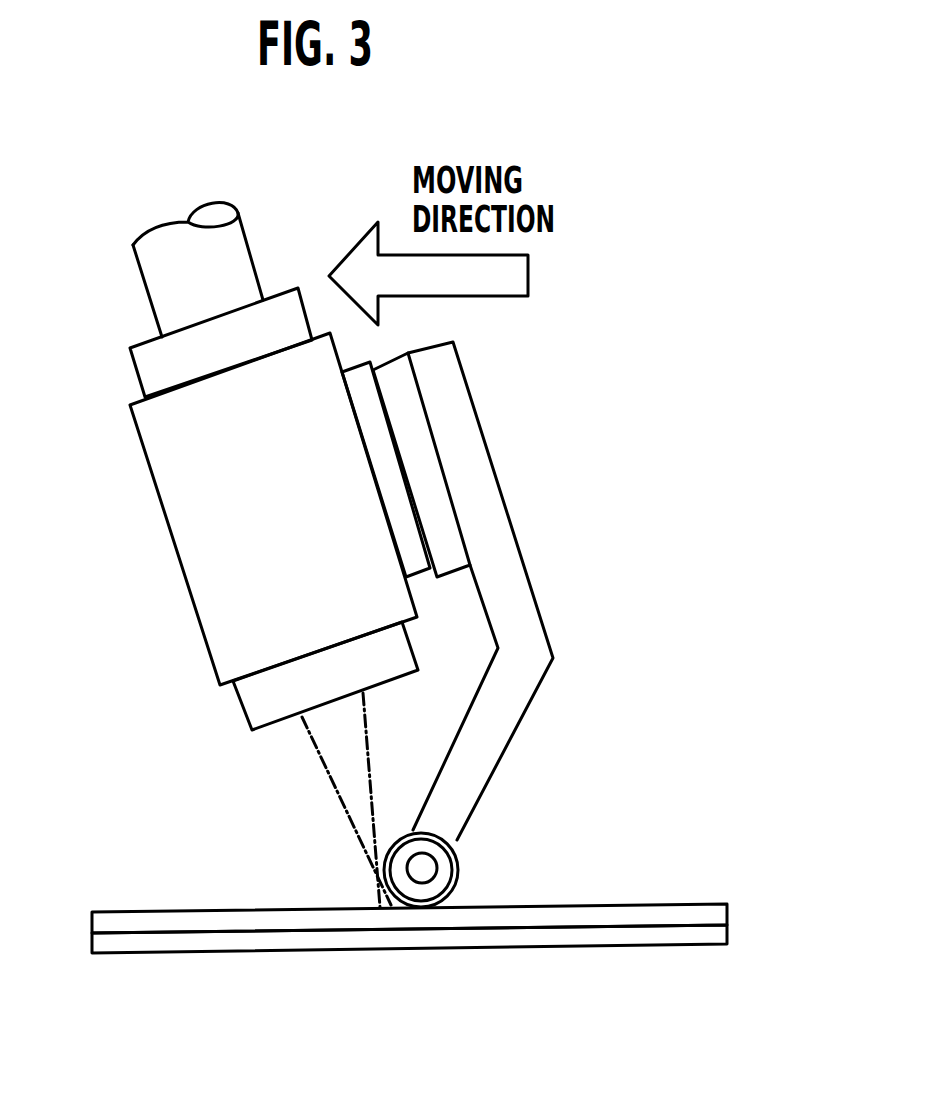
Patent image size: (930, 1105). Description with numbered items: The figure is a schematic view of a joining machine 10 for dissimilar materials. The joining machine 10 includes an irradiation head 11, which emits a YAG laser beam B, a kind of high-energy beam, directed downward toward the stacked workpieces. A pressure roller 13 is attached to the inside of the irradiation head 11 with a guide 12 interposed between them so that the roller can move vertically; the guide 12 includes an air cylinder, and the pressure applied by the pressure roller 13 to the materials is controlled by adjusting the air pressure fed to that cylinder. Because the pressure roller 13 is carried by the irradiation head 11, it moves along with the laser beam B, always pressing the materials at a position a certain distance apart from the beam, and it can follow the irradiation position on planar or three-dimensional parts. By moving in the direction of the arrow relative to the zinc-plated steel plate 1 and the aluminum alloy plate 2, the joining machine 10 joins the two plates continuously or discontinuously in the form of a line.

The joining machine 10 is at (389, 555).
The irradiation head 11 is at (220, 590).
The guide 12 is at (443, 537).
The pressure roller 13 is at (432, 850).
The laser beam B is at (342, 772).
The zinc-plated steel plate 1 is at (140, 927).
The aluminum alloy plate 2 is at (670, 938).